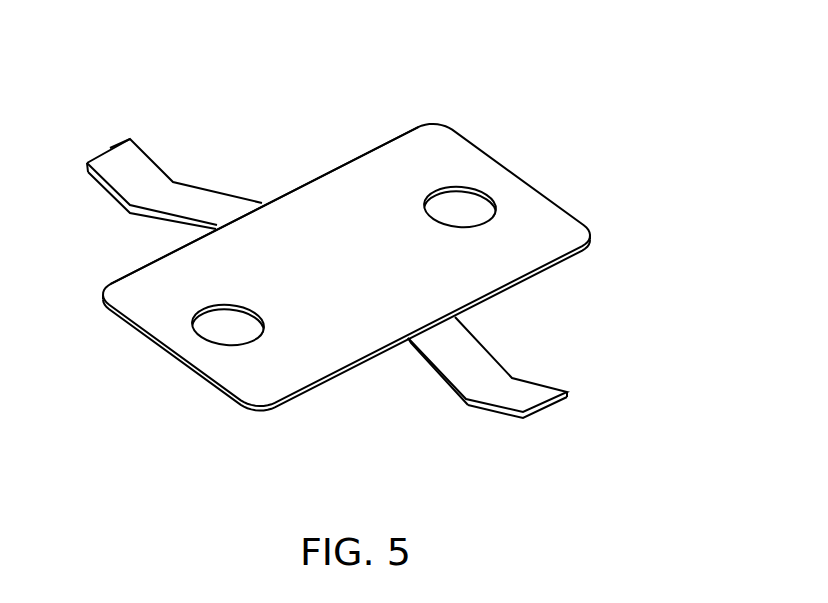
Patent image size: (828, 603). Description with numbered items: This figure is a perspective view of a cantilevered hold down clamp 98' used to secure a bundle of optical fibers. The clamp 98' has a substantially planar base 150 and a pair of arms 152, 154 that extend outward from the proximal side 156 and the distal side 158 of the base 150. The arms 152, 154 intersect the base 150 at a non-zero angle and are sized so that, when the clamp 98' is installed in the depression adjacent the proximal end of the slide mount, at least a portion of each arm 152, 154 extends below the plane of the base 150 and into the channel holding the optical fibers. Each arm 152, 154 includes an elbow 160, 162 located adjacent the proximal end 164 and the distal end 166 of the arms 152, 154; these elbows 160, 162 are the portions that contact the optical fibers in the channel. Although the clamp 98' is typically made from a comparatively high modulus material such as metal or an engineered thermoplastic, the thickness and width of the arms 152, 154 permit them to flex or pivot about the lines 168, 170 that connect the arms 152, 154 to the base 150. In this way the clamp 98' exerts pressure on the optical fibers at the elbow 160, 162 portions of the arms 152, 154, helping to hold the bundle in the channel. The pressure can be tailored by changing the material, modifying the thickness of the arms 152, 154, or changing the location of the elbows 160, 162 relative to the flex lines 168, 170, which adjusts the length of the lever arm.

The proximal hold down clamp 98' is at (594, 34).
The base 150 is at (580, 210).
The arm 152 is at (487, 375).
The arm 154 is at (208, 202).
The proximal side 156 is at (575, 257).
The distal side 158 is at (363, 150).
The elbow 160 is at (468, 413).
The elbow 162 is at (130, 213).
The proximal end 164 is at (552, 413).
The distal end 166 is at (107, 148).
The flex line 168 is at (440, 375).
The flex line 170 is at (237, 210).